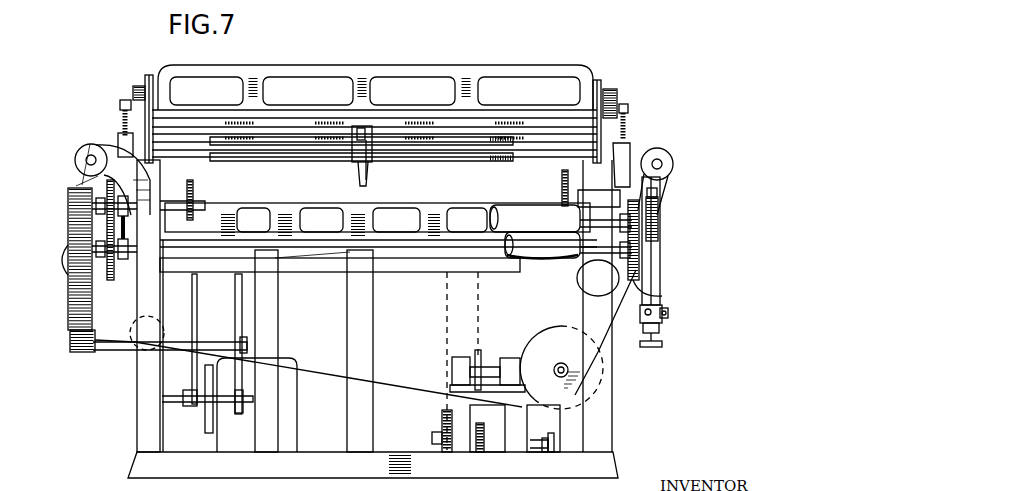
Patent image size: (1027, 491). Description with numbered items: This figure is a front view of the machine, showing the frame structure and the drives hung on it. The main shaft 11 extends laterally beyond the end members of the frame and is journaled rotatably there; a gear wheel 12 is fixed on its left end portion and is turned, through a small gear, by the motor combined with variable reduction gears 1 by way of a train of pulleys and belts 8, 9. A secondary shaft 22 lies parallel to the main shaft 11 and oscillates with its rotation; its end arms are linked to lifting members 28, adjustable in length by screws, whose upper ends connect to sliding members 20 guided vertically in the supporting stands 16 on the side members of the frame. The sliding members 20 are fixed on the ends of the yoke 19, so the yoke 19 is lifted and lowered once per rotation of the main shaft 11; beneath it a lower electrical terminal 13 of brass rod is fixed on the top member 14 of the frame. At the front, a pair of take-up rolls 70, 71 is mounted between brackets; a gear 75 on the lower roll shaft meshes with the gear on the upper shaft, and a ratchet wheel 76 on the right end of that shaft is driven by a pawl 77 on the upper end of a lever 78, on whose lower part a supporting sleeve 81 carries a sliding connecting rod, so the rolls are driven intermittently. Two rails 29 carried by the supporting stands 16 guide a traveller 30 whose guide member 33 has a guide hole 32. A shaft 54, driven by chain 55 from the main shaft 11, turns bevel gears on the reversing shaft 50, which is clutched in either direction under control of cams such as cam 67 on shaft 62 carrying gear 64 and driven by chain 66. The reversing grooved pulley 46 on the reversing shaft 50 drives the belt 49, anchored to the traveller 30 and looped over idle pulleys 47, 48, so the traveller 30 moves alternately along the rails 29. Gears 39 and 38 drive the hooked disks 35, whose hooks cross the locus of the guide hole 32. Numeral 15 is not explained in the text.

The motor combined with variable reduction gears 1 is at (306, 396).
The belt 8 is at (197, 336).
The belt 9 is at (242, 336).
The main shaft 11 is at (78, 352).
The gear wheel 12 is at (68, 325).
The lower electrical terminal 13 is at (300, 206).
The top member 14 is at (278, 212).
The frame column 15 is at (137, 395).
The supporting stand 16 is at (148, 78).
The yoke 19 is at (388, 65).
The sliding member 20 is at (133, 90).
The secondary shaft 22 is at (412, 272).
The lifting member 28 is at (124, 118).
The rail 29 is at (428, 142).
The traveller 30 is at (356, 128).
The guide hole 32 is at (360, 184).
The guide member 33 is at (369, 168).
The hooked disk 35 is at (193, 190).
The gear 38 is at (107, 213).
The gear 39 is at (107, 248).
The reversing grooved pulley 46 is at (560, 334).
The idle pulley 47 is at (80, 152).
The idle pulley 48 is at (164, 322).
The belt 49 is at (75, 176).
The reversing shaft 50 is at (562, 363).
The shaft 54 is at (494, 360).
The chain 55 is at (476, 336).
The shaft 62 is at (532, 450).
The gear 64 is at (482, 448).
The chain 66 is at (445, 333).
The cam 67 is at (553, 448).
The take-up roll 70 is at (535, 218).
The take-up roll 71 is at (542, 245).
The gear 75 is at (659, 293).
The ratchet wheel 76 is at (650, 251).
The pawl 77 is at (658, 192).
The lever 78 is at (660, 273).
The supporting sleeve 81 is at (662, 316).